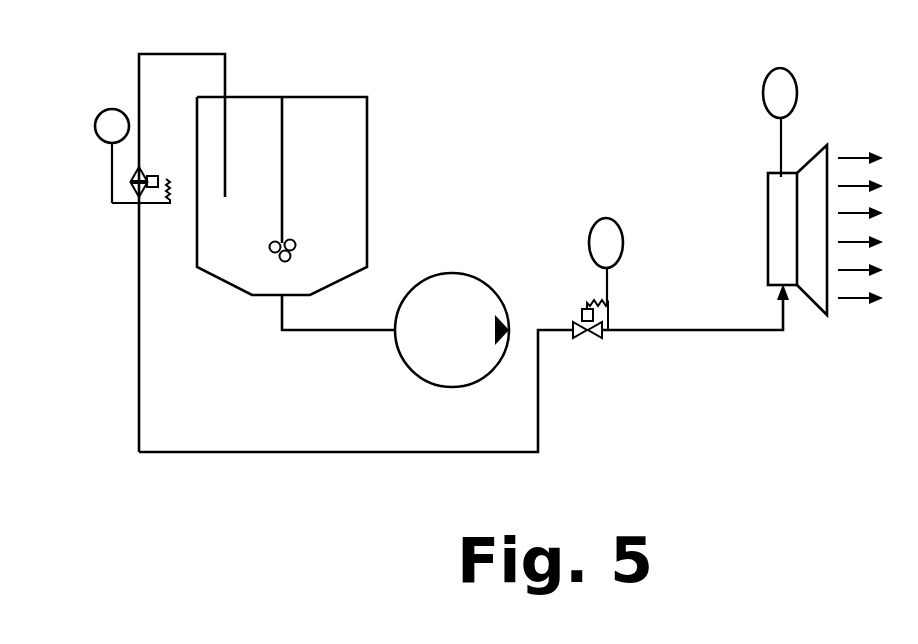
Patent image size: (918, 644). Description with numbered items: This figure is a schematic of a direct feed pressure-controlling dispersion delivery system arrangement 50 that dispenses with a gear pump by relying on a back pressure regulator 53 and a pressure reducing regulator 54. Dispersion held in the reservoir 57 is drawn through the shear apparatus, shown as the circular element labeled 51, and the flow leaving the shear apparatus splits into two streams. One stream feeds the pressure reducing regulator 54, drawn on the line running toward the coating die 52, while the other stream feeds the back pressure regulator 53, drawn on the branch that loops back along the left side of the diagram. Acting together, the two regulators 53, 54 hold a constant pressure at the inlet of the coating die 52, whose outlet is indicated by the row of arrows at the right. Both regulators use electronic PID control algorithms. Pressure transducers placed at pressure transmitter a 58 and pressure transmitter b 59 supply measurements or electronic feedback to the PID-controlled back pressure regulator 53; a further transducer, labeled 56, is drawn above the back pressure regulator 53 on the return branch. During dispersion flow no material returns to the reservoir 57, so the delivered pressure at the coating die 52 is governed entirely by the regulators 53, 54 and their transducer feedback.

The direct feed pressure-controlling dispersion delivery system arrangement 50 is at (108, 425).
The pump 51 is at (412, 373).
The coating die 52 is at (810, 293).
The back pressure regulator 53 is at (115, 201).
The pressure reducing regulator 54 is at (602, 331).
The pressure transducer PTa 56 is at (112, 109).
The reservoir 57 is at (352, 165).
The pressure transmitter a 58 is at (600, 219).
The pressure transmitter b 59 is at (763, 90).